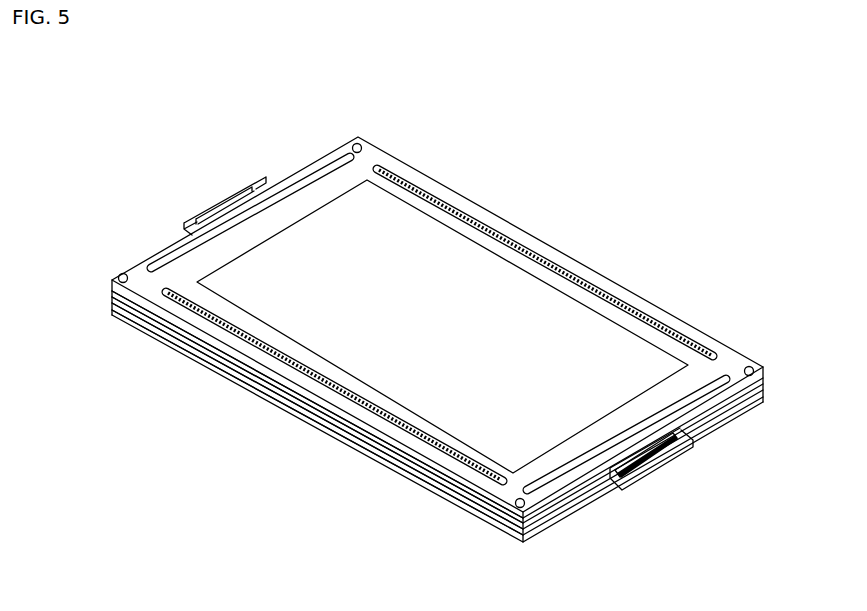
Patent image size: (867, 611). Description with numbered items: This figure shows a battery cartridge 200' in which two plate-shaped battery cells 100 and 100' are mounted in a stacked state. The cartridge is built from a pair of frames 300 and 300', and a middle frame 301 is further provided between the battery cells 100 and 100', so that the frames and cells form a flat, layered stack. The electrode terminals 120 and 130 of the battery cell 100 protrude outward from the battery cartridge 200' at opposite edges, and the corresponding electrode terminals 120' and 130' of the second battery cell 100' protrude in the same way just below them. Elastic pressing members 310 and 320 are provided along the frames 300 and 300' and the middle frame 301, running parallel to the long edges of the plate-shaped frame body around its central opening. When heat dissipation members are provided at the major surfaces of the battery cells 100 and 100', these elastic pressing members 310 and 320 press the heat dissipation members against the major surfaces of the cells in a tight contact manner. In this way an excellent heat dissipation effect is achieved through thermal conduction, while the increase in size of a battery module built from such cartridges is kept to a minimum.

The battery cartridge 200' is at (399, 298).
The battery cell 100 is at (317, 427).
The battery cell 100' is at (317, 444).
The electrode terminal 120 is at (198, 185).
The electrode terminal 120' is at (181, 204).
The electrode terminal 130 is at (693, 477).
The electrode terminal 130' is at (675, 492).
The frame 300 is at (317, 404).
The frame 300' is at (317, 410).
The middle frame 301 is at (118, 314).
The elastic pressing member 310 is at (447, 200).
The elastic pressing member 320 is at (198, 327).